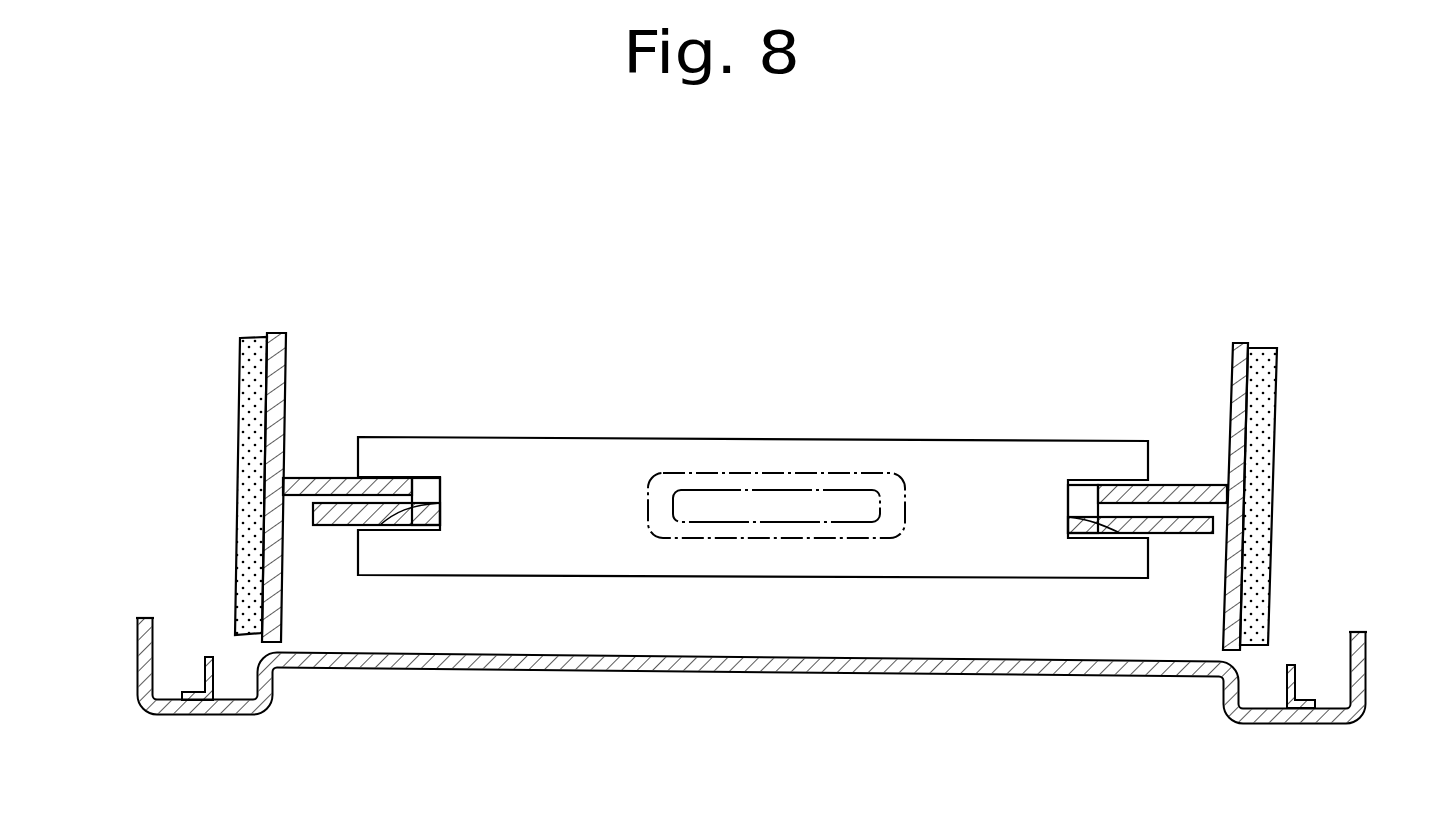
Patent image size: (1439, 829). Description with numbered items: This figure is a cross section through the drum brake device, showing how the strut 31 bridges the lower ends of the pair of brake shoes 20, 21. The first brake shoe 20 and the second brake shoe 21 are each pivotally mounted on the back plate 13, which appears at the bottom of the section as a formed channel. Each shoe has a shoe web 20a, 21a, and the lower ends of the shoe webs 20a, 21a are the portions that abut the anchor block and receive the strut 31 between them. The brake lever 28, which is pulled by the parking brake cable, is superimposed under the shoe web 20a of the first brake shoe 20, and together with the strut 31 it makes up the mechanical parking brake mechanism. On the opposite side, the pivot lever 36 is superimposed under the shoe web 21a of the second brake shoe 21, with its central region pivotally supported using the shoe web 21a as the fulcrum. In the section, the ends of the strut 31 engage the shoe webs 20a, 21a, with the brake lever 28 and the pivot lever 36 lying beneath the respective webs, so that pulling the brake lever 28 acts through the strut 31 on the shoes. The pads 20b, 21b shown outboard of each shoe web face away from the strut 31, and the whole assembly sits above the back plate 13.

The back plate 13 is at (747, 676).
The first brake shoe 20 is at (1249, 540).
The shoe web 20a is at (1185, 485).
The pad of second latch member 20b is at (1278, 368).
The second brake shoe 21 is at (266, 532).
The shoe web 21a is at (340, 485).
The pad of first latch member 21b is at (241, 362).
The brake lever 28 is at (1190, 538).
The strut 31 is at (765, 445).
The pivot lever 36 is at (320, 527).